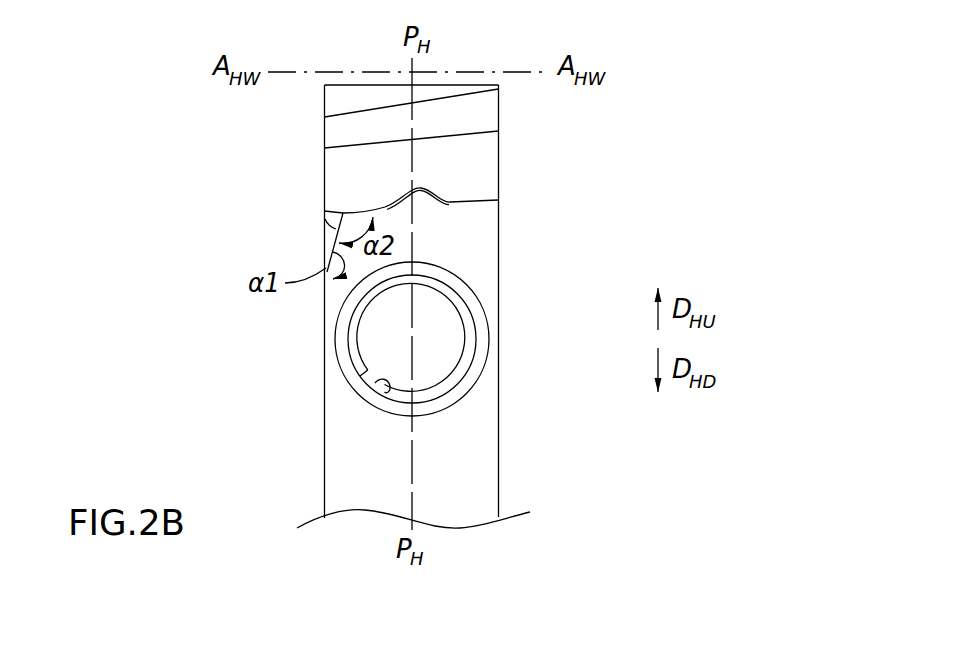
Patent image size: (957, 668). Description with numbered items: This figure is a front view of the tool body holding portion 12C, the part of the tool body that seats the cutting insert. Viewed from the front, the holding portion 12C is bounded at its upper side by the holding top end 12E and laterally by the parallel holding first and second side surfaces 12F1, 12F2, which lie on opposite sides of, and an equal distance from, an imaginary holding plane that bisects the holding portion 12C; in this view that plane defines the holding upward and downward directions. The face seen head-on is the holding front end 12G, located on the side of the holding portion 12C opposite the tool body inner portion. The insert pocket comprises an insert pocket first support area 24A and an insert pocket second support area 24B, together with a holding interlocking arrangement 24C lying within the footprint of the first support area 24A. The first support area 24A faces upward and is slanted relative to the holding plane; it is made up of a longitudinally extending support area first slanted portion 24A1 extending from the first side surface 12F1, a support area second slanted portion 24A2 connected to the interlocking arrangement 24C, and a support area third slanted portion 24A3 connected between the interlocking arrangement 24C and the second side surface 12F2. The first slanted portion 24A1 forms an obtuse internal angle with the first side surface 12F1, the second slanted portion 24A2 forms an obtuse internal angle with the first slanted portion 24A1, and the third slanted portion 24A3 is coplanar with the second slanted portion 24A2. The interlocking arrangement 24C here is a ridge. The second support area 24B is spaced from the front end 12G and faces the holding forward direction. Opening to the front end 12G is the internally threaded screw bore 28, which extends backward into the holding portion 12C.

The tool body holding portion 12C is at (636, 50).
The holding top end 12E is at (351, 59).
The holding first side surface 12F1 is at (323, 344).
The holding second side surface 12F2 is at (501, 378).
The holding front end 12G is at (480, 258).
The insert pocket first support area 24A is at (347, 207).
The support area first slanted portion 24A1 is at (327, 242).
The support area second slanted portion 24A2 is at (323, 210).
The support area third slanted portion 24A3 is at (484, 197).
The insert pocket second support area 24B is at (342, 133).
The holding interlocking arrangement 24C is at (449, 207).
The screw bore 28 is at (375, 383).